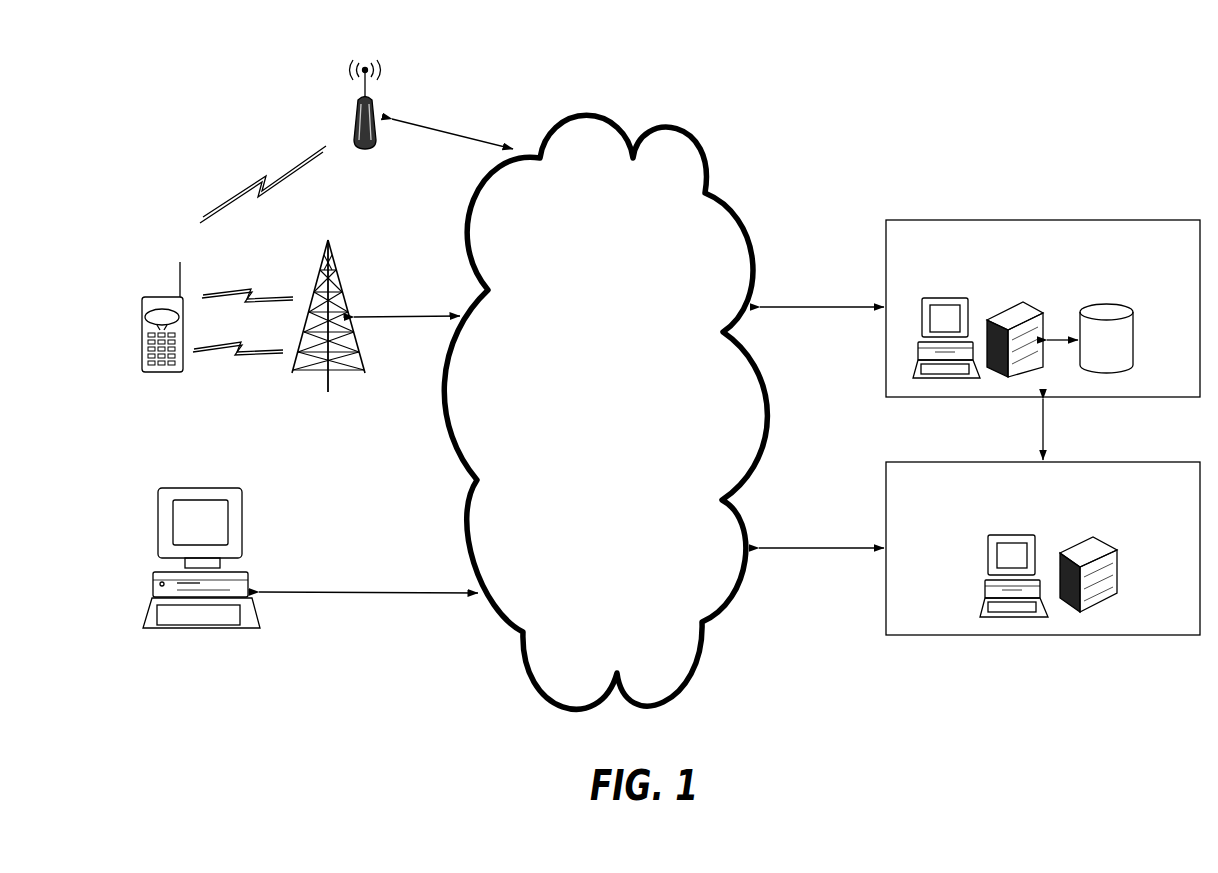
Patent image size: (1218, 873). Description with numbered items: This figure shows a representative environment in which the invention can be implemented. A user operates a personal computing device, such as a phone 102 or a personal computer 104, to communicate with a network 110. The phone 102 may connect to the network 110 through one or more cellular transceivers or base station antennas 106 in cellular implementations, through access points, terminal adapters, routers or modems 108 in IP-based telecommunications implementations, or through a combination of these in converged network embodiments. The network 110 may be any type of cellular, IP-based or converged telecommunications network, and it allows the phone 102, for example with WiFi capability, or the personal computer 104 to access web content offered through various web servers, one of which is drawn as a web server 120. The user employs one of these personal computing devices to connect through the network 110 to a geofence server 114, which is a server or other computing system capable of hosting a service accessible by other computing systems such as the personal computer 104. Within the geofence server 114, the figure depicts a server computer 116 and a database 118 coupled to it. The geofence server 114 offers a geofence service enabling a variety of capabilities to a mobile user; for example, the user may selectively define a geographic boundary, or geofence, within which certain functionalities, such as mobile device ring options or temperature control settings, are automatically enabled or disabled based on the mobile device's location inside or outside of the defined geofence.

The phone 102 is at (188, 272).
The personal computer 104 is at (215, 475).
The cellular transceivers or base station antennas 106 is at (348, 278).
The access points, terminal adapters, routers or modems 108 is at (385, 63).
The network 110 is at (605, 412).
The geofence server 114 is at (1043, 296).
The server computer 116 is at (942, 297).
The database 118 is at (1113, 300).
The web server 120 is at (1043, 535).